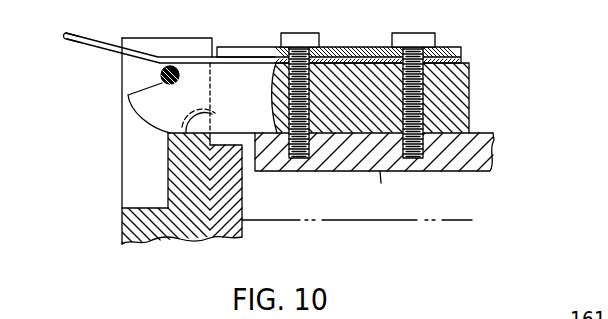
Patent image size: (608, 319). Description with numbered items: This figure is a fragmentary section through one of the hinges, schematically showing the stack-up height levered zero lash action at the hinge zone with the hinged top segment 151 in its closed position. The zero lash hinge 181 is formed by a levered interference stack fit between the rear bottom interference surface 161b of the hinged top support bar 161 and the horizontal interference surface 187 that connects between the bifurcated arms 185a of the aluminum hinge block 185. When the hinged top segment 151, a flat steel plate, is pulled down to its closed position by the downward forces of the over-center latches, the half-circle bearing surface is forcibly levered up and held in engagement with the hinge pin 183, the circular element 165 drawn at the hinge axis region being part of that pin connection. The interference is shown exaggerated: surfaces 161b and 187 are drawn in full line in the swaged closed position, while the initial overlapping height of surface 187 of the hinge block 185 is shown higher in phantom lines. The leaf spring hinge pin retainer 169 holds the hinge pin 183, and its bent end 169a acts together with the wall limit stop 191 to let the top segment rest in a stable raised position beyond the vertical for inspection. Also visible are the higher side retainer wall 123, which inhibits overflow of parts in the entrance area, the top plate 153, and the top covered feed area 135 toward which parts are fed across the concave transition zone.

The side retainer wall 123 is at (237, 240).
The top covered feed area 135 is at (297, 218).
The hinged top segment 151 is at (511, 146).
The top plate 153 is at (381, 183).
The hinged top support bar 161 is at (463, 93).
The rear bottom interference surface 161b is at (168, 188).
The contact ball 165 is at (178, 80).
The leaf spring hinge pin retainer 169 is at (206, 56).
The bent end 169a is at (94, 40).
The zero lash hinge 181 is at (108, 75).
The hinge pin 183 is at (158, 69).
The hinge block 185 is at (157, 243).
The bifurcated arm 185a is at (145, 38).
The horizontal interference surface 187 is at (222, 110).
The wall limit stop 191 is at (172, 150).